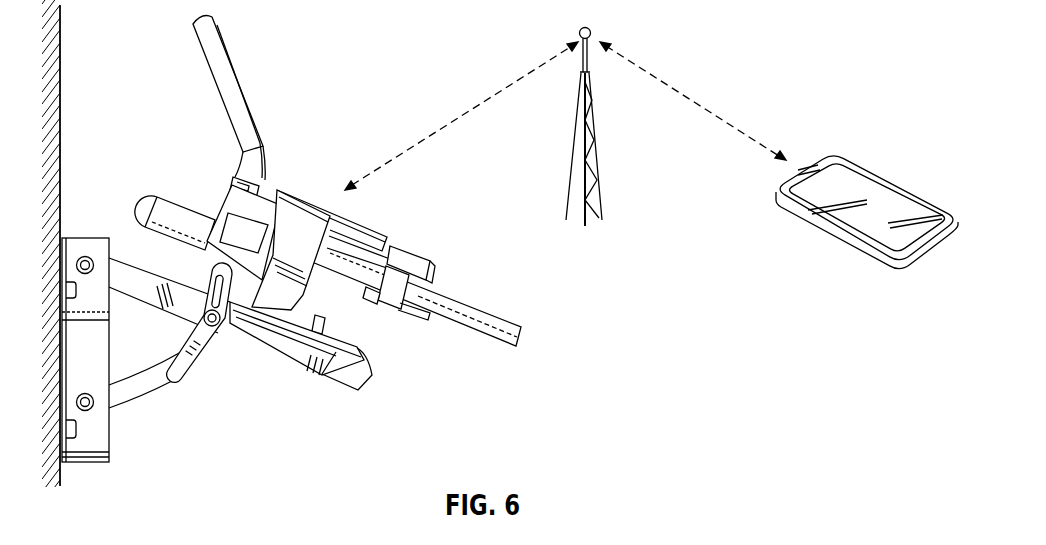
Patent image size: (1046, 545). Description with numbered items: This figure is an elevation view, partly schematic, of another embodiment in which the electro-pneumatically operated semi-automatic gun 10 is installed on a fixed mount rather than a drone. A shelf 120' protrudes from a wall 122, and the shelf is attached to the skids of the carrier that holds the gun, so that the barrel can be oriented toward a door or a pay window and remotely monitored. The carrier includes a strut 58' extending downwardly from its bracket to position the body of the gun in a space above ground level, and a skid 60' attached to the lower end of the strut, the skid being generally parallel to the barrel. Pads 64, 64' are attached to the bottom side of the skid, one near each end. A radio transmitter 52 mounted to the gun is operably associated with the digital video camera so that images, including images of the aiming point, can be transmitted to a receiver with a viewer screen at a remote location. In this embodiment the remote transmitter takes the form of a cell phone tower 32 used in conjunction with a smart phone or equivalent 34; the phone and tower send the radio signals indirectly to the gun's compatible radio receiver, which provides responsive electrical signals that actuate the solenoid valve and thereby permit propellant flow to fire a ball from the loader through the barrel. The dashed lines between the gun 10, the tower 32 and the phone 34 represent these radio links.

The electro-pneumatically operated semi-automatic gun 10 is at (400, 218).
The cell phone tower 32 is at (598, 160).
The smart phone 34 is at (880, 195).
The radio transmitter 52 is at (243, 228).
The strut 58' is at (295, 228).
The skid 60' is at (327, 338).
The pad 64 is at (226, 397).
The pad 64' is at (209, 331).
The shelf 120' is at (381, 379).
The wall 122 is at (60, 97).